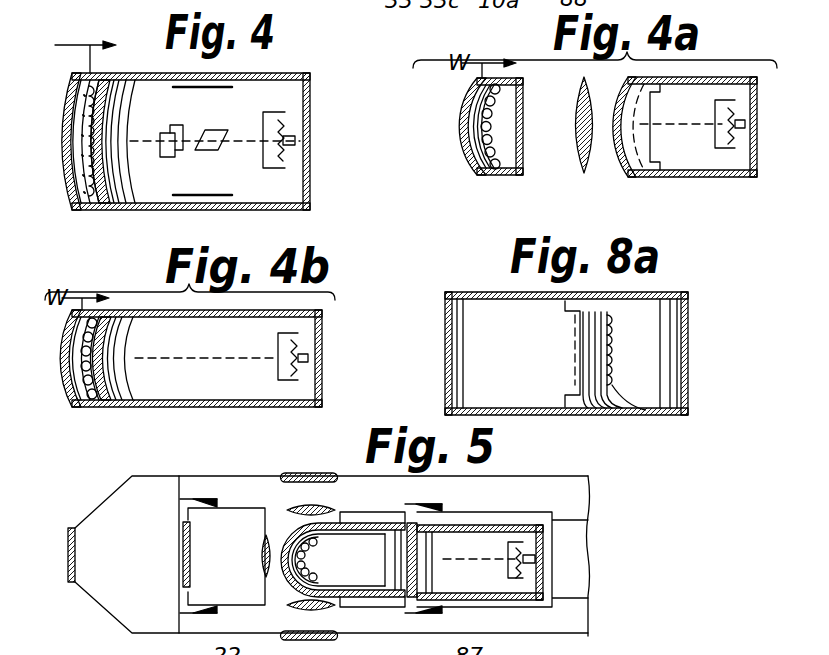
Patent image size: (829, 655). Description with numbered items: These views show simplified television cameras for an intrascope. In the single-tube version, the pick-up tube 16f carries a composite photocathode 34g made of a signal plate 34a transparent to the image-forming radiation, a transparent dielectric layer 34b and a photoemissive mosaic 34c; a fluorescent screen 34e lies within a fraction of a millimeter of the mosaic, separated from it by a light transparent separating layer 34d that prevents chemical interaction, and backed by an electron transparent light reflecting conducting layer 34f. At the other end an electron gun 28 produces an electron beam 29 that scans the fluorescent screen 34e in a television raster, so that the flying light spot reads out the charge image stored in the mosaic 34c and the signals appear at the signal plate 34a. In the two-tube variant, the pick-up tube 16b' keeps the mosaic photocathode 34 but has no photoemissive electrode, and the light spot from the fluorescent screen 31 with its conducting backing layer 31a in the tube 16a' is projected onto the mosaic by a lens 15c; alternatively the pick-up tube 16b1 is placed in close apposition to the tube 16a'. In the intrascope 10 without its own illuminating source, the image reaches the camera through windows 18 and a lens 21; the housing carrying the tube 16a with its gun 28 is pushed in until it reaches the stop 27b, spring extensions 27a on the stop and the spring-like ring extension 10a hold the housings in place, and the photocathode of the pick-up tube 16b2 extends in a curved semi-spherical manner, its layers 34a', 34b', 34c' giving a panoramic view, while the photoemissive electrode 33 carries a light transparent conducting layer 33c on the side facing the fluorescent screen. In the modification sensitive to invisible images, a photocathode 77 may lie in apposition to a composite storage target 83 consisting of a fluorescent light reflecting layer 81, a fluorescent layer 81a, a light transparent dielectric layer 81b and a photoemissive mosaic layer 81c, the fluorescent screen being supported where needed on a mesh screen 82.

In FIG. 5, the probe body 10 is at (312, 510).
In FIG. 5, the ring-like extension 10a is at (432, 512).
In FIG. 4A, the lens 15c is at (591, 175).
In FIG. 5, the vacuum tube 16a is at (489, 542).
In FIG. 4A, the tube 16a' is at (707, 147).
In FIG. 4B, the tube 16a' is at (197, 373).
In FIG. 4A, the pick-up tube 16b' is at (520, 141).
In FIG. 4B, the end cap 16b1 is at (62, 352).
In FIG. 5, the pick-up tube 16b2 is at (373, 597).
In FIG. 4, the pick-up tube 16f is at (272, 76).
In FIG. 5, the windows 18 is at (306, 477).
In FIG. 5, the lens 21 is at (260, 556).
In FIG. 5, the spring extensions 27a is at (444, 523).
In FIG. 5, the stop 27b is at (420, 512).
In FIG. 4, the electron gun 28 is at (287, 125).
In FIG. 4A, the electron gun 28 is at (742, 112).
In FIG. 4B, the electron gun 28 is at (300, 346).
In FIG. 5, the electron gun 28 is at (527, 570).
In FIG. 4, the electron beam 29 is at (243, 141).
In FIG. 4A, the electron beam 29 is at (660, 142).
In FIG. 4B, the electron beam 29 is at (196, 359).
In FIG. 5, the electron beam 29 is at (480, 561).
In FIG. 4A, the fluorescent screen 31 is at (622, 100).
In FIG. 4B, the fluorescent screen 31 is at (138, 408).
In FIG. 5, the fluorescent screen 31 is at (428, 593).
In FIG. 4B, the backing layer 31a is at (150, 408).
In FIG. 8A, the photoemissive electrode 33 is at (665, 300).
In FIG. 5, the photoemissive electrode 33 is at (394, 572).
In FIG. 8A, the light transparent conducting layer 33c is at (680, 300).
In FIG. 4A, the photocathode 34 is at (470, 180).
In FIG. 4B, the photocathode 34 is at (75, 412).
In FIG. 4, the signal plate 34a is at (68, 165).
In FIG. 4A, the signal plate 34a is at (443, 127).
In FIG. 4, the insulating layer 34b is at (103, 177).
In FIG. 4A, the insulating layer 34b is at (449, 126).
In FIG. 4, the photoemissive mosaic 34c is at (117, 167).
In FIG. 4A, the photoemissive mosaic 34c is at (526, 126).
In FIG. 4, the separating layer 34d is at (113, 206).
In FIG. 4, the fluorescent screen 34e is at (122, 92).
In FIG. 4, the light reflecting conducting layer 34f is at (140, 196).
In FIG. 4, the composite photocathode 34g is at (108, 62).
In FIG. 5, the window layer 34a' is at (307, 534).
In FIG. 5, the window layer 34b' is at (292, 568).
In FIG. 5, the window layer 34c' is at (341, 559).
In FIG. 8A, the photocathode 77 is at (470, 290).
In FIG. 8A, the fluorescent light reflecting layer 81 is at (586, 415).
In FIG. 8A, the fluorescent layer 81a is at (598, 412).
In FIG. 8A, the light transparent dielectric layer 81b is at (612, 412).
In FIG. 8A, the photoemissive mosaic layer 81c is at (642, 412).
In FIG. 4A, the mesh screen 82 is at (652, 170).
In FIG. 8A, the mesh screen 82 is at (567, 378).
In FIG. 8A, the composite storage target 83 is at (620, 292).